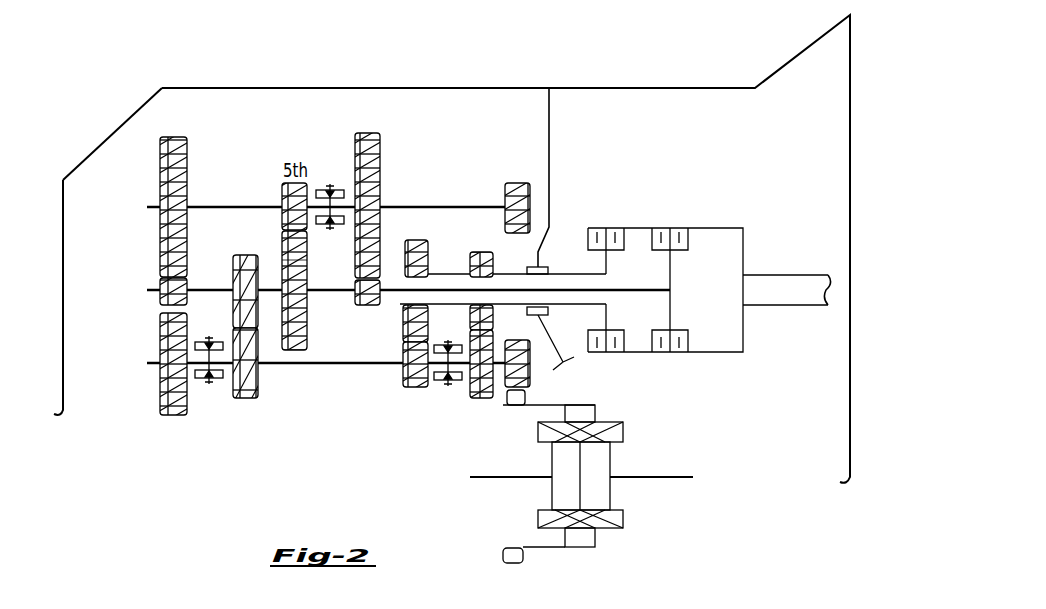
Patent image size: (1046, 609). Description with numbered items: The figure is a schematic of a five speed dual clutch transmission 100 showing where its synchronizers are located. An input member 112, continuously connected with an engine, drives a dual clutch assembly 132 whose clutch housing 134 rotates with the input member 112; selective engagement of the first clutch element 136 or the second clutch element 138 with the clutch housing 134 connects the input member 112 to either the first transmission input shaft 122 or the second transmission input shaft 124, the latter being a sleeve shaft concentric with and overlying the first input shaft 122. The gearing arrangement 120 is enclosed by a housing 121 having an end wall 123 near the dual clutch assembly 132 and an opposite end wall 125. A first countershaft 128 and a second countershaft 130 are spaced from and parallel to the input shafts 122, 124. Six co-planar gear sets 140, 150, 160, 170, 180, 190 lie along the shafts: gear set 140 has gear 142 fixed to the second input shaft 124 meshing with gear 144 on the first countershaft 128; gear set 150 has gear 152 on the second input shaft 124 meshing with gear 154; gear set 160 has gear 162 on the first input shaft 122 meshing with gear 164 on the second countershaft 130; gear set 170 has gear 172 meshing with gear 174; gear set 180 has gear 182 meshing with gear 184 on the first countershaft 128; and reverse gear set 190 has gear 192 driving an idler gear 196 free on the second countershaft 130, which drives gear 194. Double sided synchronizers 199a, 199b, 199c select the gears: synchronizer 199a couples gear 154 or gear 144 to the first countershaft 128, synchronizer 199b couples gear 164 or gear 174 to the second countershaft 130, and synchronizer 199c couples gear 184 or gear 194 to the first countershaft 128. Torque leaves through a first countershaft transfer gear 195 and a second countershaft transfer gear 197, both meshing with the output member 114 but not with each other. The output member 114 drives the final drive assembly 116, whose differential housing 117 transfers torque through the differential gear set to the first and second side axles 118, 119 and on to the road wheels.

The transmission 100 is at (742, 70).
The input shaft or member 112 is at (815, 273).
The output gear or member 114 is at (530, 398).
The final drive assembly 116 is at (616, 484).
The differential housing 117 is at (600, 540).
The first side axle 118 is at (680, 480).
The second side axle 119 is at (483, 480).
The gearing arrangement 120 is at (132, 114).
The housing 121 is at (668, 88).
The first transmission input shaft or member 122 is at (578, 289).
The end wall 123 is at (552, 112).
The second transmission input shaft or member 124 is at (443, 268).
The end wall 125 is at (62, 218).
The first countershaft 128 is at (332, 365).
The second countershaft 130 is at (425, 205).
The dual clutch assembly 132 is at (707, 257).
The clutch housing 134 is at (743, 338).
The first clutch element or hub 136 is at (670, 302).
The second clutch element or hub 138 is at (607, 263).
The co-planar gear set 140 is at (463, 346).
The gear 142 is at (481, 250).
The gear 144 is at (507, 405).
The co-planar gear set 150 is at (389, 408).
The gear 152 is at (402, 315).
The gear 154 is at (402, 383).
The co-planar gear set 160 is at (385, 193).
The gear 162 is at (355, 302).
The gear 164 is at (380, 146).
The co-planar gear set 170 is at (292, 353).
The gear 172 is at (307, 243).
The gear 174 is at (282, 185).
The co-planar gear set 180 is at (276, 337).
The gear 182 is at (242, 257).
The gear 184 is at (258, 388).
The co-planar gear set 190 is at (140, 314).
The gear 192 is at (160, 282).
The gear 194 is at (172, 416).
The first countershaft transfer gear 195 is at (530, 375).
The gear 196 is at (160, 180).
The second countershaft transfer gear 197 is at (515, 182).
The synchronizer assembly 199a is at (456, 393).
The synchronizer assembly 199b is at (340, 182).
The synchronizer assembly 199c is at (216, 392).